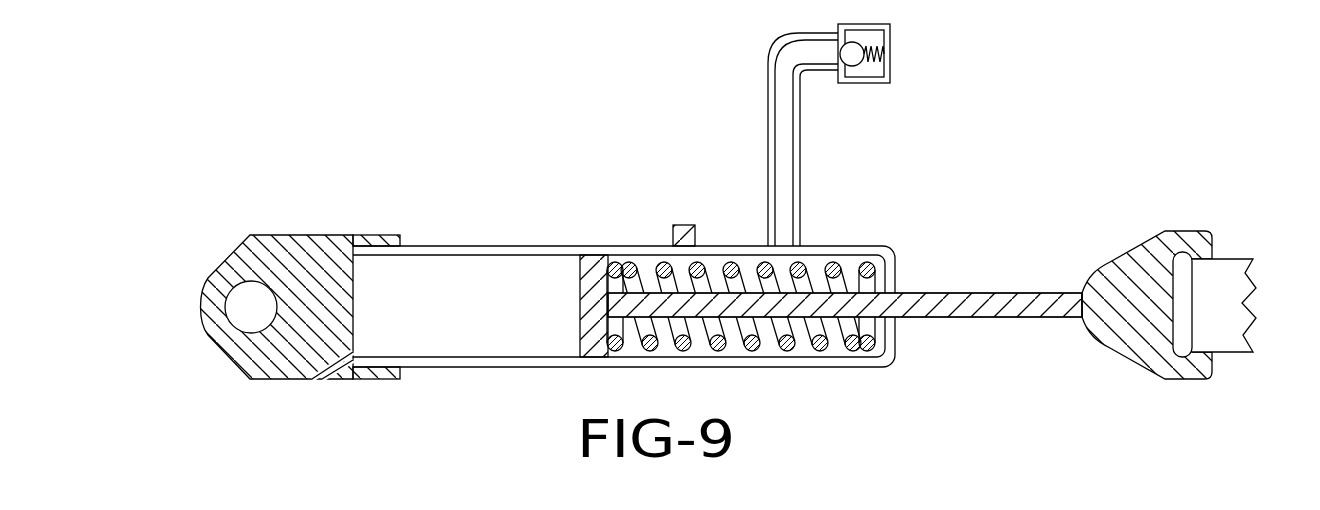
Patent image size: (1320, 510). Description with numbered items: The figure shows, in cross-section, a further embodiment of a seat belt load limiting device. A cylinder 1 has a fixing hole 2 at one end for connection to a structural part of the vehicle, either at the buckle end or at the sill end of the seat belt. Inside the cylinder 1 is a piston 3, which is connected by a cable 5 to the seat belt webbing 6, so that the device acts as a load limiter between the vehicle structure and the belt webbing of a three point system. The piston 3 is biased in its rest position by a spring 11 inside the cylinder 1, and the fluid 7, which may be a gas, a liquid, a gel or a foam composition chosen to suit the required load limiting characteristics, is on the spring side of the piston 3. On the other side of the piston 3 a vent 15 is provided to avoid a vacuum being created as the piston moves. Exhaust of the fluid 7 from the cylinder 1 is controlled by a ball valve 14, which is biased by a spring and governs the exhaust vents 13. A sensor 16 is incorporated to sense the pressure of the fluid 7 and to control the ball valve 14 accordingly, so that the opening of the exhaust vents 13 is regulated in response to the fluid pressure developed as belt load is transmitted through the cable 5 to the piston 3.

The cylinder 1 is at (883, 365).
The fixing hole 2 is at (245, 298).
The piston 3 is at (592, 256).
The cable 5 is at (955, 293).
The seat belt webbing 6 is at (1234, 268).
The fluid 7 is at (848, 268).
The spring 11 is at (785, 350).
The exhaust vents 13 is at (868, 83).
The ball valve 14 is at (886, 48).
The vent 15 is at (318, 380).
The sensor 16 is at (686, 225).